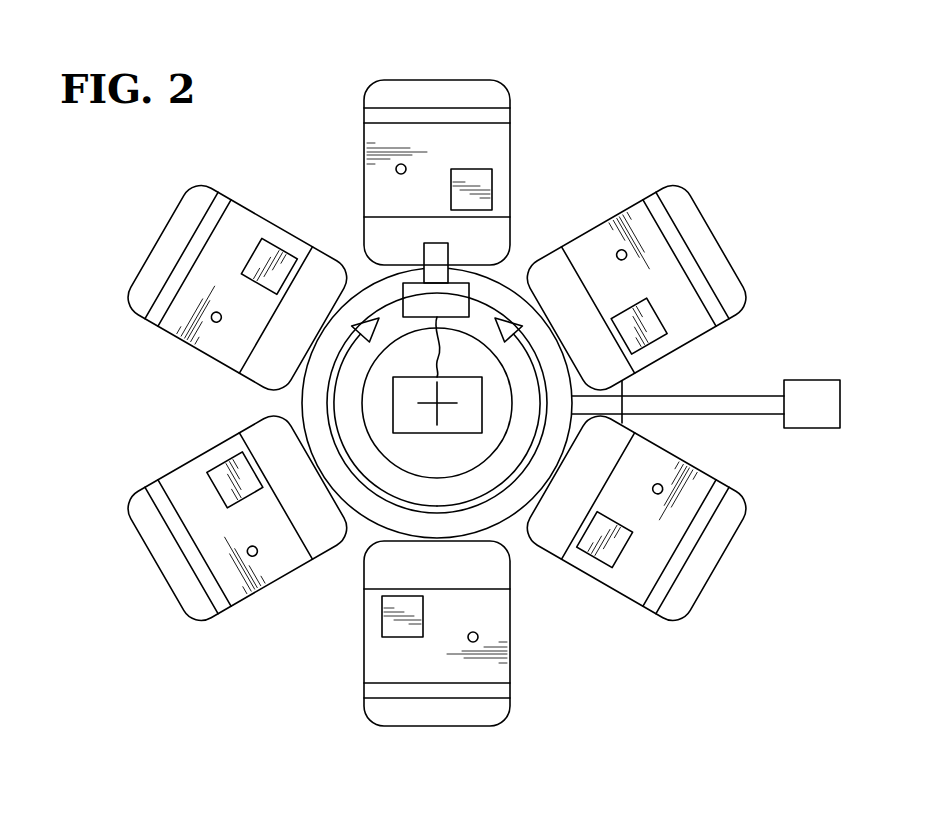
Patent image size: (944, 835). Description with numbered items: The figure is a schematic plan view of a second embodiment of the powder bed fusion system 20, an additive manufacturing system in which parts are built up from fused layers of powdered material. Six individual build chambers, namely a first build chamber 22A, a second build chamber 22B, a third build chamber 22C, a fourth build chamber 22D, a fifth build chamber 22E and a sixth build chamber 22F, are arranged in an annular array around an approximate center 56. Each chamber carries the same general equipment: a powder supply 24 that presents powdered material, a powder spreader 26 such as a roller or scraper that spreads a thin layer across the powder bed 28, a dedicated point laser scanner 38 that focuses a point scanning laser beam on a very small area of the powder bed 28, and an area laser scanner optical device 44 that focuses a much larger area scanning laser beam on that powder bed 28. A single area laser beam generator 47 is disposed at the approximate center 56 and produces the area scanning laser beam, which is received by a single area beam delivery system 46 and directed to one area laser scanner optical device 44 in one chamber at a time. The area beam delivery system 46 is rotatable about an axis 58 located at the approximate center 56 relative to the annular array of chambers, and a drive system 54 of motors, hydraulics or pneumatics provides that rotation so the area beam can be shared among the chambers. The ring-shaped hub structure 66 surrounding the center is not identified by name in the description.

The powder bed fusion system 20 is at (619, 135).
The first build chamber 22A is at (440, 78).
The second build chamber 22B is at (722, 243).
The third build chamber 22C is at (720, 566).
The fourth build chamber 22D is at (433, 730).
The fifth build chamber 22E is at (156, 562).
The sixth build chamber 22F is at (160, 233).
The powder supply 24 is at (490, 95).
The powder spreader 26 is at (400, 117).
The powder bed 28 is at (488, 147).
The point laser scanner 38 is at (396, 170).
The area laser scanner optical device 44 is at (485, 185).
The area beam delivery system 46 is at (437, 312).
The area laser beam generator 47 is at (405, 405).
The drive system 54 is at (823, 393).
The approximate center 56 is at (440, 403).
The axis 58 is at (438, 400).
The rotary hub ring 66 is at (487, 305).